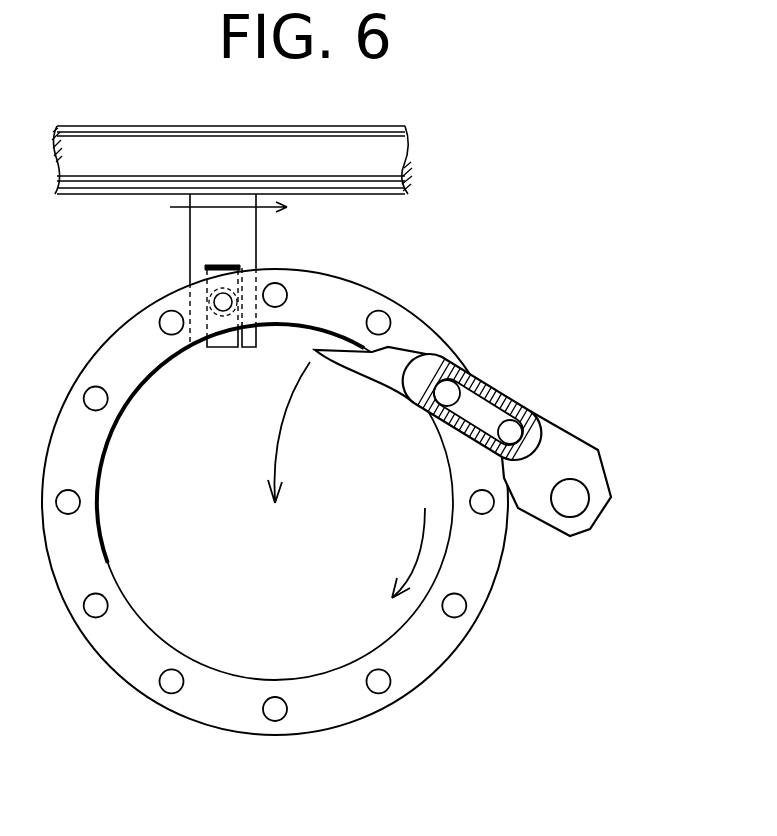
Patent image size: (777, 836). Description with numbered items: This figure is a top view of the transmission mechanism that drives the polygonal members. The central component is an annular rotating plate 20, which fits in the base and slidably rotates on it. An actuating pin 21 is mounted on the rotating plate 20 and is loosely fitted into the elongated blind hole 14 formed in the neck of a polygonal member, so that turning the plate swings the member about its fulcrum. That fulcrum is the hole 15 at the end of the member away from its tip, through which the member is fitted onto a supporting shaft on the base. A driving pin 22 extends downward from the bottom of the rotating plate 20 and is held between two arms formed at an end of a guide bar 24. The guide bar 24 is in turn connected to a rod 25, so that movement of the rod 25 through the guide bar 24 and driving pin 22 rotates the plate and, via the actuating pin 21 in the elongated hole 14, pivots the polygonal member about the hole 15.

The elongated blind hole 14 is at (492, 461).
The hole 15 is at (574, 503).
The annular rotating plate 20 is at (410, 333).
The actuating pin 21 is at (450, 392).
The driving pin 22 is at (225, 312).
The guide bar 24 is at (190, 251).
The rod 25 is at (372, 160).